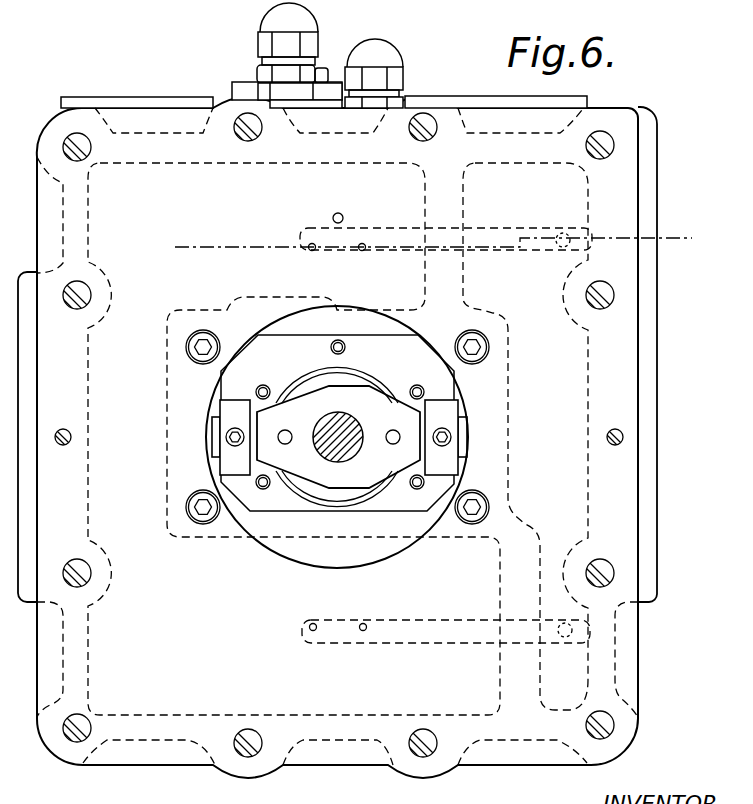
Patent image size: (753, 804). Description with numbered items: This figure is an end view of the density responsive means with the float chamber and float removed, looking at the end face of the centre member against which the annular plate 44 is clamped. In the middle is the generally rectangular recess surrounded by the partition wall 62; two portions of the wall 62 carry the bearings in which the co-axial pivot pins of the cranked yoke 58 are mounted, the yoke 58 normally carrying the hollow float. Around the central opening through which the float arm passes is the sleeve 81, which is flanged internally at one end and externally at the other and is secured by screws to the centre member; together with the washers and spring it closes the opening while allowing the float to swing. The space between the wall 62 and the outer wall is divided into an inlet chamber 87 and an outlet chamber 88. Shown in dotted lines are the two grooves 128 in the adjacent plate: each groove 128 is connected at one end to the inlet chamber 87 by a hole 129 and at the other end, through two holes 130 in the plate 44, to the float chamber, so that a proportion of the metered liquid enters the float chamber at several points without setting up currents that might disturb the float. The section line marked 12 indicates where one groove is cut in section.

The section line 12- 12 is at (682, 211).
The annular plate 44 is at (628, 116).
The cranked yoke 58 is at (410, 432).
The partition wall 62 is at (317, 517).
The sleeve 81 is at (376, 386).
The inlet chamber 87 is at (588, 393).
The outlet chamber 88 is at (187, 703).
The grooves 128 is at (507, 227).
The hole 129 is at (563, 233).
The holes 130 is at (358, 268).